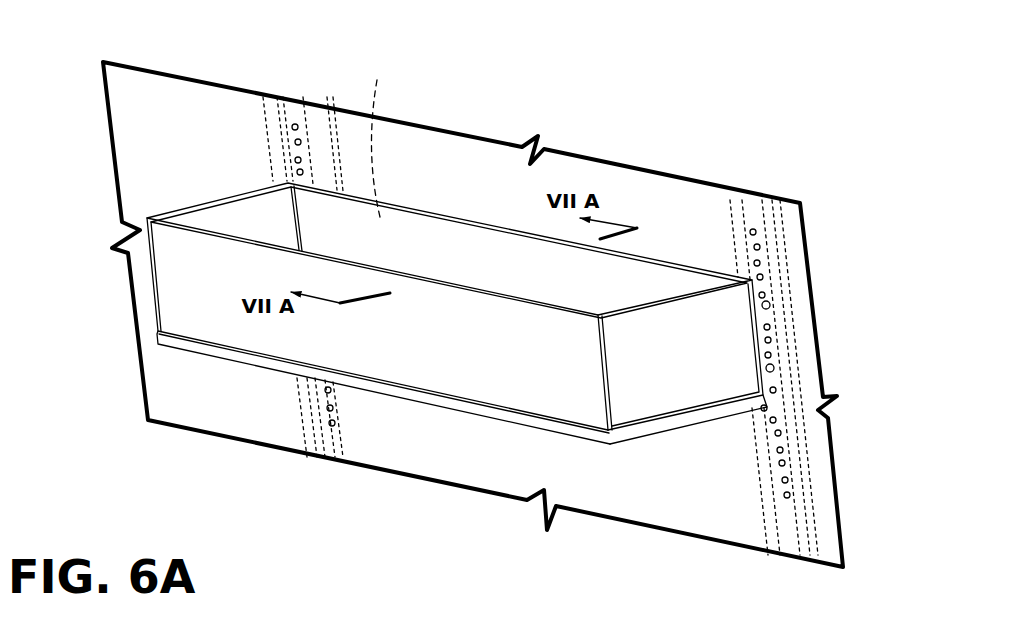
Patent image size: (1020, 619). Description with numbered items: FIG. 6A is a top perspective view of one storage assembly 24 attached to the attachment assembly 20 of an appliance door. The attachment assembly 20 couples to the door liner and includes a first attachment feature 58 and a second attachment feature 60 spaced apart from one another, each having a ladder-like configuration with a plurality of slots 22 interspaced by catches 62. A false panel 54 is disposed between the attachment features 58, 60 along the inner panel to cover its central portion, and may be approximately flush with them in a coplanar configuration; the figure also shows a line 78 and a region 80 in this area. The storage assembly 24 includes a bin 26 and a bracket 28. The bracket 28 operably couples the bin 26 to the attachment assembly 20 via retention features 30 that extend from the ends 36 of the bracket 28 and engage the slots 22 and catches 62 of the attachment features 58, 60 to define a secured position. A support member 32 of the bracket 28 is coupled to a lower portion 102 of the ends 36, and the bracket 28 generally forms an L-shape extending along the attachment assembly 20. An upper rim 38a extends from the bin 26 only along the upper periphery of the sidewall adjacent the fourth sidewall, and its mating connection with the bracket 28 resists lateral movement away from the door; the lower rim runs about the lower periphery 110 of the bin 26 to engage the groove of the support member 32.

The attachment assembly 20 is at (473, 303).
The slot 22 is at (290, 162).
The storage assembly 24 is at (473, 303).
The bin 26 is at (405, 337).
The bracket 28 is at (416, 462).
The retention feature 30 is at (834, 347).
The support member 32 is at (157, 326).
The end 36 is at (766, 276).
The upper rim 38a is at (478, 214).
The false panel 54 is at (415, 179).
The first attachment feature 58 is at (745, 201).
The second attachment feature 60 is at (295, 110).
The catch 62 is at (752, 249).
The hidden edge 78 is at (377, 134).
The tray interior surface 80 is at (426, 258).
The lower portion 102 is at (776, 411).
The lower periphery 110 is at (642, 436).